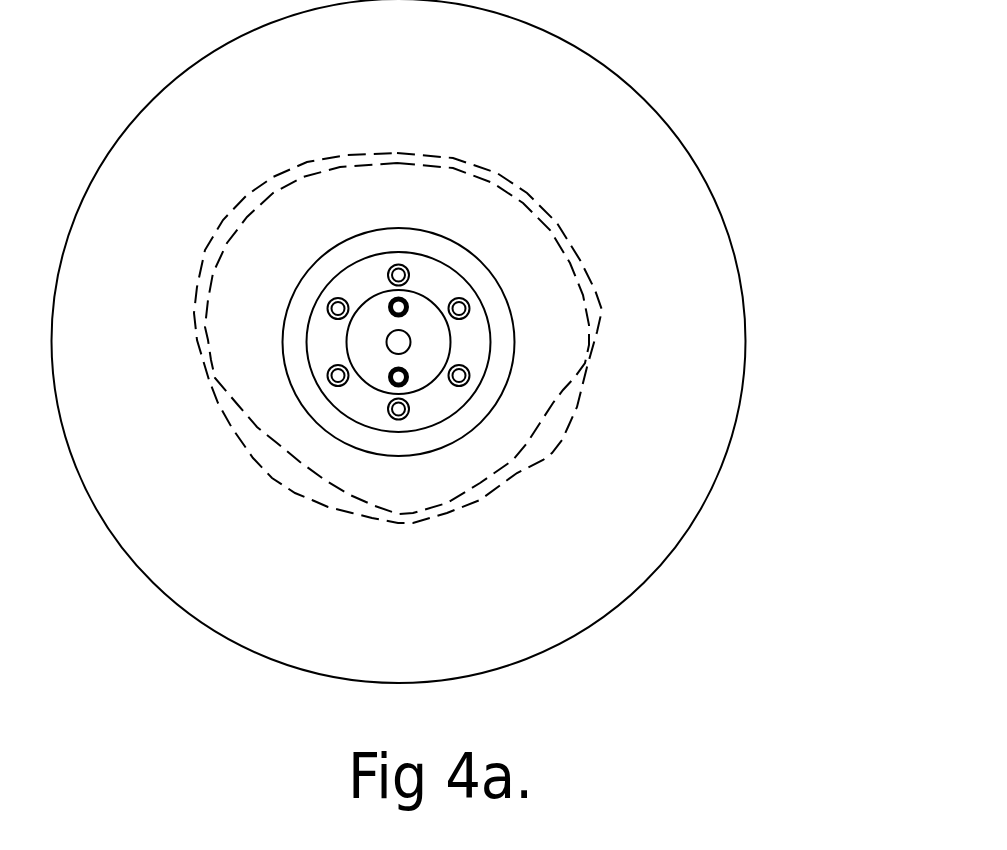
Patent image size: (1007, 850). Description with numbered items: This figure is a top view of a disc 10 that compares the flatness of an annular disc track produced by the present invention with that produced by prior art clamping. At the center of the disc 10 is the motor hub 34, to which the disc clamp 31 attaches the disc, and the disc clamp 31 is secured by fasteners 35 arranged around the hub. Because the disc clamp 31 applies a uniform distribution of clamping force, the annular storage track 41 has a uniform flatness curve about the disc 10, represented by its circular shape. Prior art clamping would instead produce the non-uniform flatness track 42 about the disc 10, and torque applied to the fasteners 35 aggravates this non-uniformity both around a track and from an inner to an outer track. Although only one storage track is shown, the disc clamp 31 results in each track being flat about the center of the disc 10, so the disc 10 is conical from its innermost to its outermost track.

The disc 10 is at (414, 609).
The disc clamp 31 is at (313, 422).
The motor hub 34 is at (503, 345).
The fasteners 35 is at (330, 302).
The annular storage track 41 is at (550, 449).
The non-uniform flatness track 42 is at (570, 214).